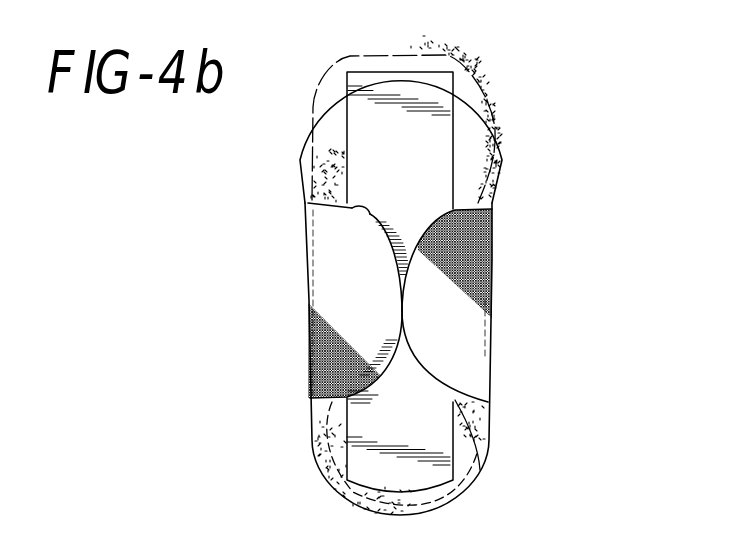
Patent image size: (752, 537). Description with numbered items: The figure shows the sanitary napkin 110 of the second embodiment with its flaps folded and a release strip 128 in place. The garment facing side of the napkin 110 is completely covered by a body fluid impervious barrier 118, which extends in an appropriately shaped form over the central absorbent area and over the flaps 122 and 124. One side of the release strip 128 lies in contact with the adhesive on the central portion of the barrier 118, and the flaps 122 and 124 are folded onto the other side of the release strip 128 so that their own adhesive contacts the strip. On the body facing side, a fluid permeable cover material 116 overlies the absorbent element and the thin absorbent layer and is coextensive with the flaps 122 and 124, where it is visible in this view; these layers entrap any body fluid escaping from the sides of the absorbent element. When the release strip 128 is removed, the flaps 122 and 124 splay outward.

The sanitary napkin 110 is at (583, 95).
The fluid permeable cover material 116 is at (313, 321).
The body fluid impervious barrier 118 is at (322, 138).
The flap 122 is at (368, 214).
The flap 124 is at (433, 395).
The release strip 128 is at (346, 98).